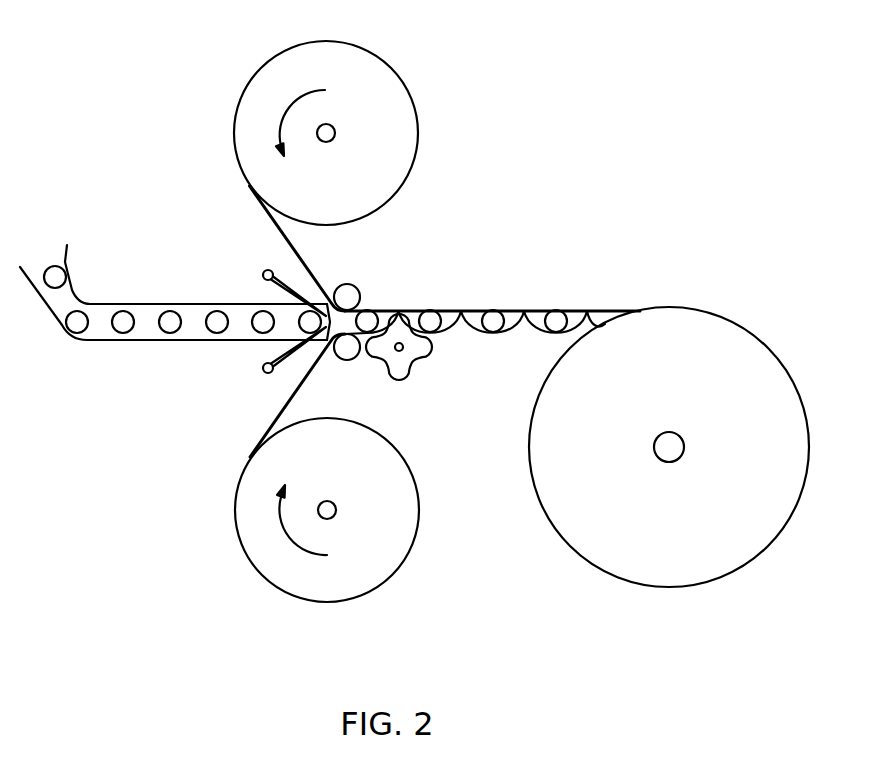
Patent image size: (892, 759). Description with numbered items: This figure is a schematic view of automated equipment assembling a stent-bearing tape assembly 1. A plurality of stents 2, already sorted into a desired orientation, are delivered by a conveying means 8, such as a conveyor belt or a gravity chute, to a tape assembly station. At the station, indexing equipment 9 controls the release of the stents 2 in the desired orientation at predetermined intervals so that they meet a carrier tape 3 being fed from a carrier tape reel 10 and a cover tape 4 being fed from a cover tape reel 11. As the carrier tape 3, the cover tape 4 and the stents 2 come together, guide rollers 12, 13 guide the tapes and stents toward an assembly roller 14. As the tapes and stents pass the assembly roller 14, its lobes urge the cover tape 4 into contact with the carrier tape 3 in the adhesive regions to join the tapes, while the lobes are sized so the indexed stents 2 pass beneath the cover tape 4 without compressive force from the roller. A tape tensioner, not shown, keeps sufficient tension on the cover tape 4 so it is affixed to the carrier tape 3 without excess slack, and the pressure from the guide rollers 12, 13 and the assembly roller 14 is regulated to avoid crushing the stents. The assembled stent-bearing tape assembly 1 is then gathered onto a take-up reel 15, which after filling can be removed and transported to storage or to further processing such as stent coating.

The stent-bearing tape assembly 1 is at (531, 300).
The stents 2 is at (124, 309).
The carrier tape 3 is at (310, 262).
The cover tape 4 is at (301, 381).
The conveying means 8 is at (70, 337).
The indexing equipment 9 is at (264, 271).
The carrier tape reel 10 is at (380, 169).
The cover tape reel 11 is at (376, 554).
The guide roller 12 is at (355, 285).
The guide roller 13 is at (347, 360).
The assembly roller 14 is at (414, 367).
The take-up reel 15 is at (620, 388).